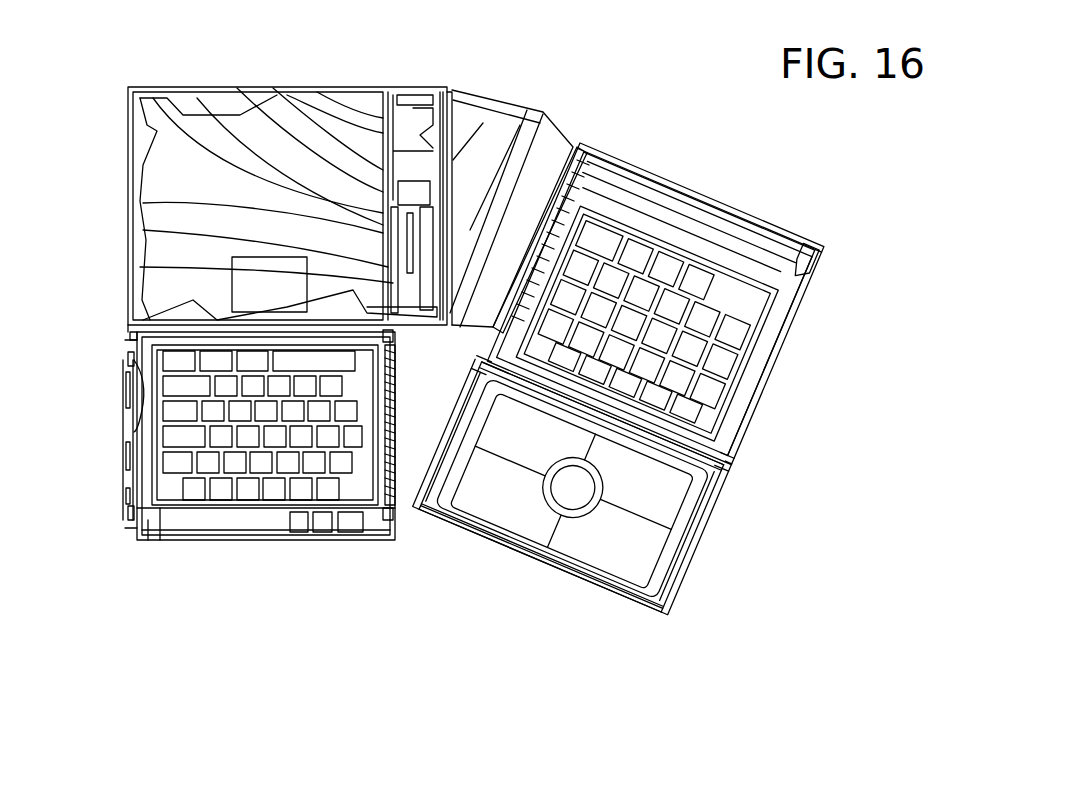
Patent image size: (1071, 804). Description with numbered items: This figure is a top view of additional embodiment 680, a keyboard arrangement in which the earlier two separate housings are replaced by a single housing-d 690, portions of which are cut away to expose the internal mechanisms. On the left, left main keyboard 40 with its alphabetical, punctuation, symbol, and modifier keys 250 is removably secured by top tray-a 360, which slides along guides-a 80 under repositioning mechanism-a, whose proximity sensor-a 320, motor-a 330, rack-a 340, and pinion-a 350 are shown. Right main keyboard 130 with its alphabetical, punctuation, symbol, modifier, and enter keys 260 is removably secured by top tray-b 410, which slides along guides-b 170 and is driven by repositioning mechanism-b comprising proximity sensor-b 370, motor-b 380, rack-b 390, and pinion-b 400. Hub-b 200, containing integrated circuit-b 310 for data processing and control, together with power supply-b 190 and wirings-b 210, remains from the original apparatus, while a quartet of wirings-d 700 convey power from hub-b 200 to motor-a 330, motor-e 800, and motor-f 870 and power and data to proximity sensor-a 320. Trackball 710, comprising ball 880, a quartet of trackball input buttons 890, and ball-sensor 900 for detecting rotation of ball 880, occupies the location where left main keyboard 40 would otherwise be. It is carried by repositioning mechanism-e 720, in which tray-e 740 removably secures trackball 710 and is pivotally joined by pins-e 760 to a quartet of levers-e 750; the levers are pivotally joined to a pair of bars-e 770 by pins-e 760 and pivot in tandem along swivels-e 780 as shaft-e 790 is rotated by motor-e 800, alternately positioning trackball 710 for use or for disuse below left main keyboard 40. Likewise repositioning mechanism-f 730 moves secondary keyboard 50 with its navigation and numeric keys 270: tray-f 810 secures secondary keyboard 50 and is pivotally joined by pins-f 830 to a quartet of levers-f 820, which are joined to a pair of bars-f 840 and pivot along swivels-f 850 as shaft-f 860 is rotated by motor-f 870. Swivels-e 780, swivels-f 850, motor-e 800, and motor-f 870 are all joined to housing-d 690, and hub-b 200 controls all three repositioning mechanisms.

The left main keyboard 40 is at (800, 252).
The secondary keyboard 50 is at (212, 502).
The guides-a 80 is at (824, 262).
The right main keyboard 130 is at (190, 545).
The guides-b 170 is at (135, 176).
The power supply-b 190 is at (418, 96).
The hub-b 200 is at (282, 102).
The wirings-b 210 is at (392, 112).
The alphabetical, punctuation, symbol, and modifier keys 250 is at (600, 232).
The alphabetical, punctuation, symbol, modifier, and enter keys 260 is at (228, 500).
The navigation and numeric keys 270 is at (292, 522).
The integrated circuit-b 310 is at (248, 110).
The proximity sensor-a 320 is at (700, 312).
The motor-a 330 is at (812, 281).
The rack-a 340 is at (582, 153).
The pinion-a 350 is at (722, 292).
The top tray-a 360 is at (637, 192).
The proximity sensor-b 370 is at (240, 290).
The motor-b 380 is at (150, 197).
The rack-b 390 is at (240, 272).
The pinion-b 400 is at (398, 232).
The top tray-b 410 is at (160, 545).
The additional embodiment 680 is at (396, 678).
The housing-d 690 is at (140, 112).
The wirings-d 700 is at (432, 330).
The trackball 710 is at (665, 600).
The repositioning mechanism-e 720 is at (818, 568).
The repositioning mechanism-f 730 is at (283, 630).
The tray-e 740 is at (735, 450).
The levers-e 750 is at (740, 420).
The pins-e 760 is at (655, 626).
The bars-e 770 is at (680, 560).
The swivels-e 780 is at (750, 380).
The shaft-e 790 is at (700, 520).
The motor-e 800 is at (730, 342).
The tray-f 810 is at (176, 545).
The levers-f 820 is at (345, 540).
The pins-f 830 is at (392, 542).
The bars-f 840 is at (410, 545).
The swivels-f 850 is at (128, 512).
The shaft-f 860 is at (128, 336).
The motor-f 870 is at (143, 247).
The ball 880 is at (578, 500).
The trackball input buttons 890 is at (592, 560).
The ball-sensor 900 is at (612, 590).